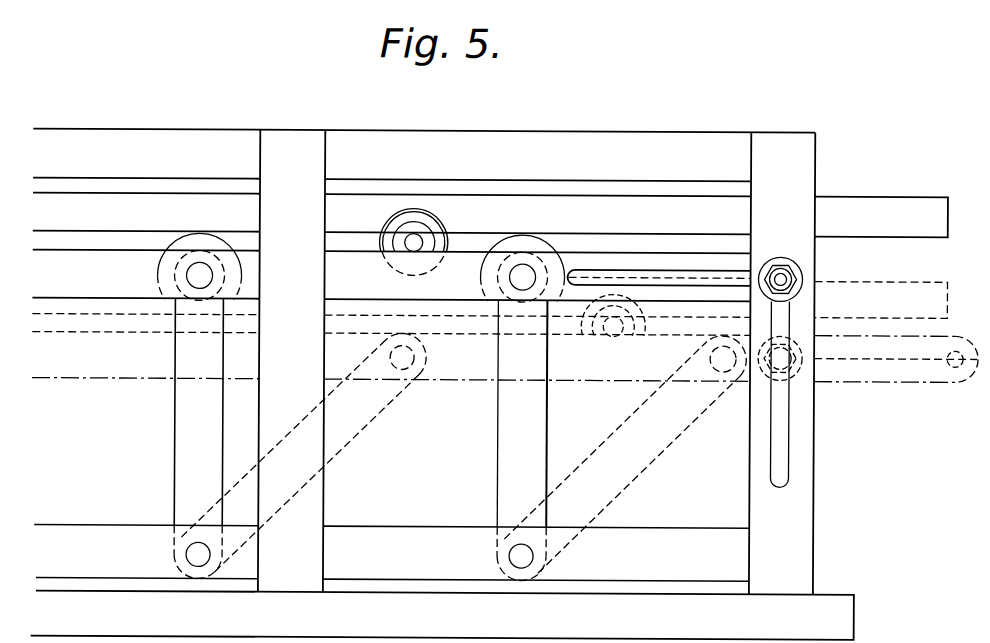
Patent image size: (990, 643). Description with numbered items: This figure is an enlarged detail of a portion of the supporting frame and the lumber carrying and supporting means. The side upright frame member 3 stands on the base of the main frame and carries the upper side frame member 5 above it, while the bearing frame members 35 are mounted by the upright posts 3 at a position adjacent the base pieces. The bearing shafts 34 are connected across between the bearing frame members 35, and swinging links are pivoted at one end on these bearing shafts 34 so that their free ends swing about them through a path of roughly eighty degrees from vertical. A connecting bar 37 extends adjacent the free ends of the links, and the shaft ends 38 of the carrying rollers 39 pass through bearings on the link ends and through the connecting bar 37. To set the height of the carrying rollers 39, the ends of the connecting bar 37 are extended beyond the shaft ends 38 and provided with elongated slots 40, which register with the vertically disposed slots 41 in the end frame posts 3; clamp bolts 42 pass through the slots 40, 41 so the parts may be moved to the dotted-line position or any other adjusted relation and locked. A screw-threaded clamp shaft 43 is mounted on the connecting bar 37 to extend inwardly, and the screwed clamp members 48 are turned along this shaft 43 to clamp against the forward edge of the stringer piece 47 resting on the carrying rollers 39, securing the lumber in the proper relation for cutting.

The side upright frame member 3 is at (800, 534).
The upper side frame member 5 is at (632, 144).
The bearing shaft 34 is at (512, 548).
The bearing frame member 35 is at (650, 538).
The connecting bar 37 is at (115, 286).
The shaft end of carrying roller 38 is at (520, 288).
The carrying roller 39 is at (534, 244).
The elongated slot 40 is at (678, 281).
The vertically disposed slot 41 is at (780, 463).
The clamp bolt 42 is at (786, 277).
The screw-threaded clamp shaft 43 is at (413, 243).
The stringer piece 47 is at (858, 211).
The screwed clamp member 48 is at (447, 228).